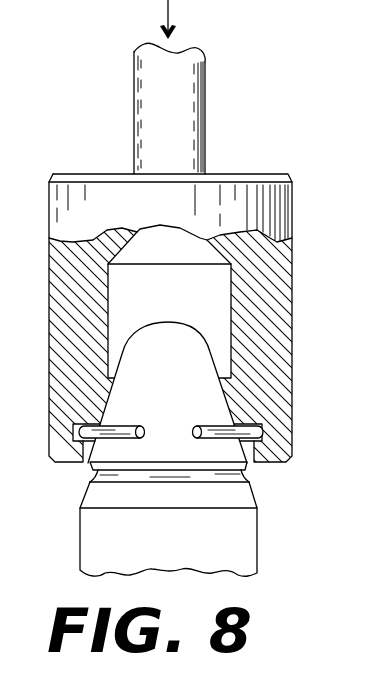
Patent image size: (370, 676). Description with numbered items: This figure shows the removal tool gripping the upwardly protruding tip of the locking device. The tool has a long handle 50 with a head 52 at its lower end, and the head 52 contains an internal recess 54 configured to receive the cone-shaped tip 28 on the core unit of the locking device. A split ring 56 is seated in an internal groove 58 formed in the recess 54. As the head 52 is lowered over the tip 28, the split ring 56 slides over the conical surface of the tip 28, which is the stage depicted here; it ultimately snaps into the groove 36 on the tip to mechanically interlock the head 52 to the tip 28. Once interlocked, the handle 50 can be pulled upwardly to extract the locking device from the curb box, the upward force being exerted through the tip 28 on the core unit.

The handle 50 is at (187, 142).
The head 52 is at (280, 325).
The internal recess 54 is at (190, 292).
The cone-shaped tip 28 is at (165, 325).
The split ring 56 is at (116, 427).
The internal groove 58 is at (260, 436).
The groove 36 is at (240, 471).